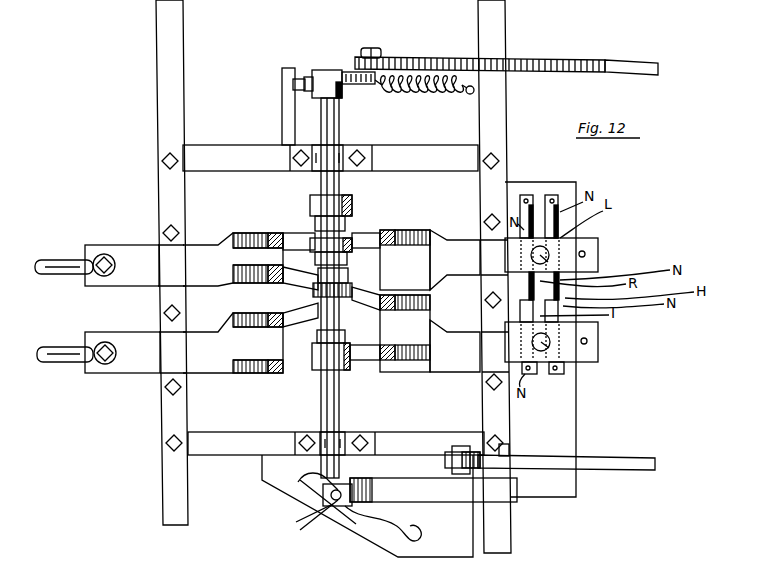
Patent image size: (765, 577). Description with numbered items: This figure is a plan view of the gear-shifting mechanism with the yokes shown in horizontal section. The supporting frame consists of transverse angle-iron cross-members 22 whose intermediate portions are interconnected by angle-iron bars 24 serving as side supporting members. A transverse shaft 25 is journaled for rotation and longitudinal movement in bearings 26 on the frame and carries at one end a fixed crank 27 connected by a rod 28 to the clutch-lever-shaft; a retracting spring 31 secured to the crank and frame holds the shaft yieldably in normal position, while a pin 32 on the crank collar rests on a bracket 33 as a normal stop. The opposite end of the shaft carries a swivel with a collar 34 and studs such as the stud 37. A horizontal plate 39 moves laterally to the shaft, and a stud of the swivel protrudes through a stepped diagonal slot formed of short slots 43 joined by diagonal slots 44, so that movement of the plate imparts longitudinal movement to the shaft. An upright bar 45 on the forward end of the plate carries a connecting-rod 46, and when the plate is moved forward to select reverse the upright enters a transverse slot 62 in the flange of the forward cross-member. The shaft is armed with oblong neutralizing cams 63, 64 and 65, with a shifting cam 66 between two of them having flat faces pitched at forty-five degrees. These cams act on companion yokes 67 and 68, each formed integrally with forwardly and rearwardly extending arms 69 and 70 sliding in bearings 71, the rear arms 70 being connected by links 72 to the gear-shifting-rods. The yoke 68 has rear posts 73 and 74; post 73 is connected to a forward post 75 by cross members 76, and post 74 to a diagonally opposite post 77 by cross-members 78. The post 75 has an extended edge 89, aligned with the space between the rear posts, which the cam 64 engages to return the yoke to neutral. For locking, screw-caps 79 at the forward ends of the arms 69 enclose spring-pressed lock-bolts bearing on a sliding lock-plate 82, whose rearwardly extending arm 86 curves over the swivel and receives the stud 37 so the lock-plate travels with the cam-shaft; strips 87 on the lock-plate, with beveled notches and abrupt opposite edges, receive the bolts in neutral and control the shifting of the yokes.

The angle-iron cross-member 22 is at (165, 107).
The angle-iron bar 24 is at (333, 300).
The transverse shaft 25 is at (339, 112).
The bearing 26 is at (298, 157).
The crank 27 is at (333, 70).
The rod 28 is at (577, 58).
The retracting spring 31 is at (440, 90).
The pin 32 is at (316, 72).
The bracket 33 is at (293, 87).
The collar 34 is at (332, 503).
The stud 37 is at (330, 503).
The horizontal plate 39 is at (367, 506).
The short slot 43 is at (303, 490).
The diagonal slot 44 is at (310, 505).
The upright bar 45 is at (447, 460).
The connecting-rod 46 is at (604, 469).
The transverse slot 62 is at (510, 448).
The oblong cam 63 is at (321, 370).
The oblong cam 64 is at (352, 257).
The oblong cam 65 is at (352, 205).
The shifting cam 66 is at (313, 296).
The yoke 67 is at (233, 353).
The yoke 68 is at (233, 249).
The forwardly extending arm 69 is at (658, 349).
The rearwardly extending arm 70 is at (122, 309).
The bearing 71 is at (333, 306).
The link 72 is at (60, 345).
The rear post 73 is at (279, 232).
The rear post 74 is at (268, 283).
The forward post 75 is at (385, 231).
The cross member 76 is at (294, 232).
The post 77 is at (270, 313).
The cross-member 78 is at (306, 272).
The screw-cap 79 is at (550, 262).
The sliding lock-plate 82 is at (540, 339).
The arm 86 is at (433, 490).
The strip 87 is at (550, 195).
The extended edge 89 is at (405, 301).